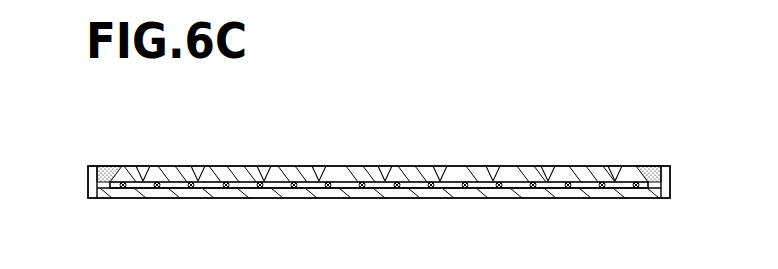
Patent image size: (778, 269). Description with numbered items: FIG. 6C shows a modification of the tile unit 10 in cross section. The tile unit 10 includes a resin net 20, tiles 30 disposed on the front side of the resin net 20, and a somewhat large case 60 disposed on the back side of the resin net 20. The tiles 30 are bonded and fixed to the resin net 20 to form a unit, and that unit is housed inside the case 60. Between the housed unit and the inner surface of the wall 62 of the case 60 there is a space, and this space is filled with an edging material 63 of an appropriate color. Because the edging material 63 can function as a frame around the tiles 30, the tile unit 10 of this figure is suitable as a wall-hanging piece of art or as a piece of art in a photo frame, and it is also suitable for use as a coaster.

The tile unit 10 is at (367, 136).
The resin net 20 is at (670, 193).
The tiles 30 is at (263, 152).
The case 60 is at (502, 198).
The wall 62 is at (88, 182).
The edging material 63 is at (103, 166).